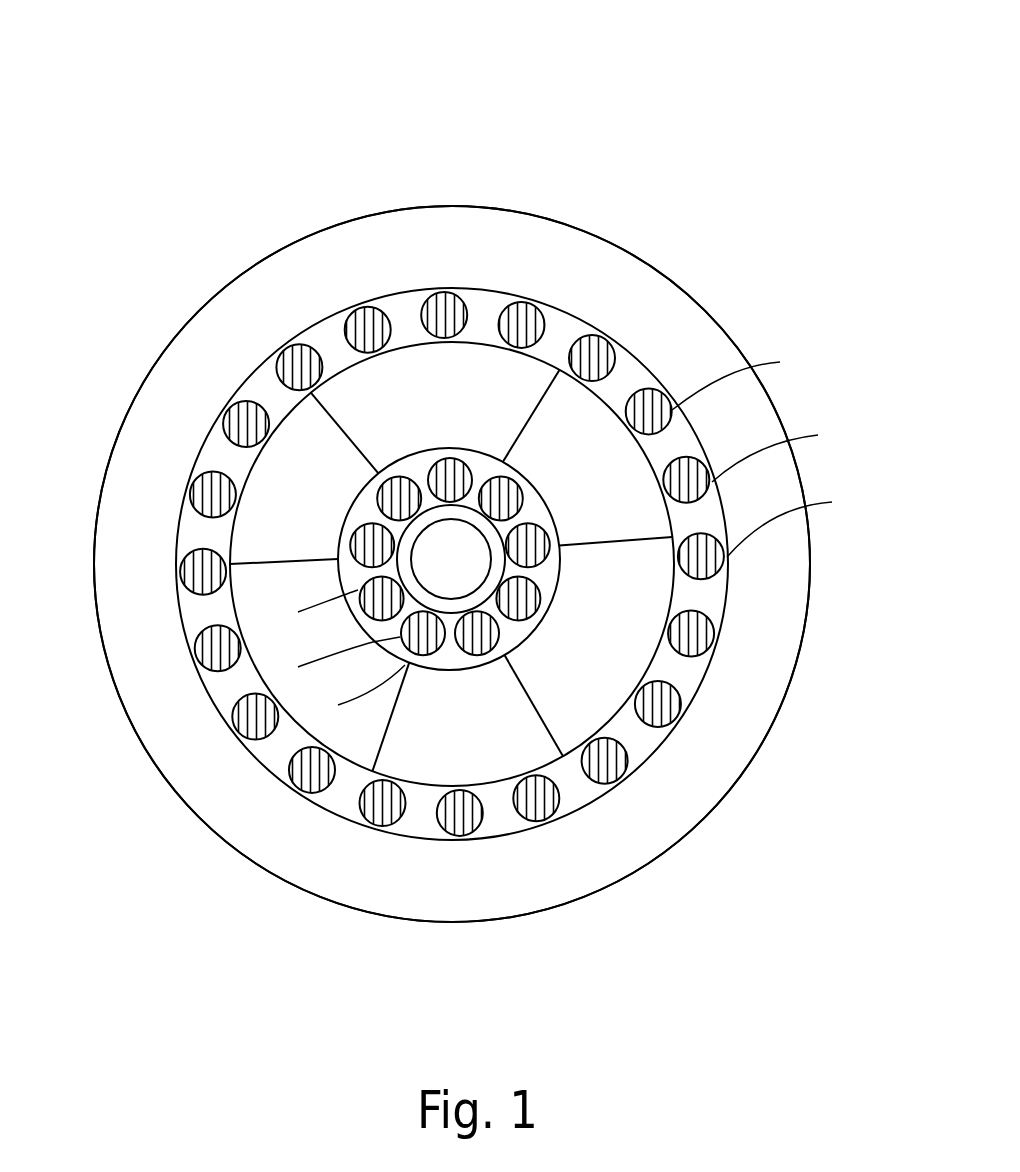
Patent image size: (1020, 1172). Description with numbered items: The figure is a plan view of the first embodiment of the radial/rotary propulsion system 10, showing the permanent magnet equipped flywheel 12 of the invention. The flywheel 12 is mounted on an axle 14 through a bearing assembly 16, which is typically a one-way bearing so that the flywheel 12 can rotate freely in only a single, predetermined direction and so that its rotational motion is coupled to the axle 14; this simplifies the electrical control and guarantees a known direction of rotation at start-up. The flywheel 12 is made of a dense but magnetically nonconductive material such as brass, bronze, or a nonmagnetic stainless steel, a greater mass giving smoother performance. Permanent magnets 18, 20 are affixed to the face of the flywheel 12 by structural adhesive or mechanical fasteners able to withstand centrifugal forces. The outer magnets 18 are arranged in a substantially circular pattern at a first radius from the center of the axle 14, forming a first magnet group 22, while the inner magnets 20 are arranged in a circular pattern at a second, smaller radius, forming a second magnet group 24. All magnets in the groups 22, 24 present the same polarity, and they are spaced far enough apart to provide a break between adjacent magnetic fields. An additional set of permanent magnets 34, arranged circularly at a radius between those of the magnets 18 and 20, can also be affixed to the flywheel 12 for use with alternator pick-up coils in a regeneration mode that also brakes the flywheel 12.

The radial/rotary propulsion system 10 is at (578, 157).
The flywheel 12 is at (258, 260).
The axle 14 is at (460, 560).
The bearing assembly 16 is at (453, 605).
The permanent magnets 18 is at (660, 392).
The permanent magnets 20 is at (352, 558).
The first magnet group 22 is at (393, 292).
The second magnet group 24 is at (415, 476).
The permanent magnets 34 is at (565, 433).